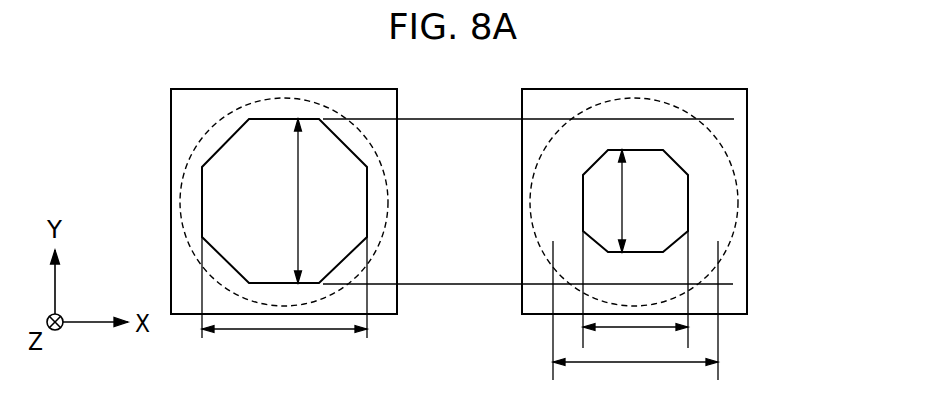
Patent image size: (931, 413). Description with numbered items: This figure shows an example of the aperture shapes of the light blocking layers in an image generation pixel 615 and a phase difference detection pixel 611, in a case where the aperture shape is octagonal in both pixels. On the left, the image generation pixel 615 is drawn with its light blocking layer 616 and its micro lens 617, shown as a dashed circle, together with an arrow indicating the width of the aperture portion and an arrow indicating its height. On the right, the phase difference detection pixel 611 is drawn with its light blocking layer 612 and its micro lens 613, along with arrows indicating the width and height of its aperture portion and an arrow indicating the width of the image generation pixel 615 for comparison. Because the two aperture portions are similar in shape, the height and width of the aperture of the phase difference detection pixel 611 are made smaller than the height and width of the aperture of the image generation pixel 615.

The phase difference detection pixel 611 is at (672, 205).
The light blocking layer 612 is at (745, 153).
The micro lens 613 is at (680, 108).
The image generation pixel 615 is at (246, 189).
The light blocking layer 616 is at (172, 157).
The micro lens 617 is at (328, 110).